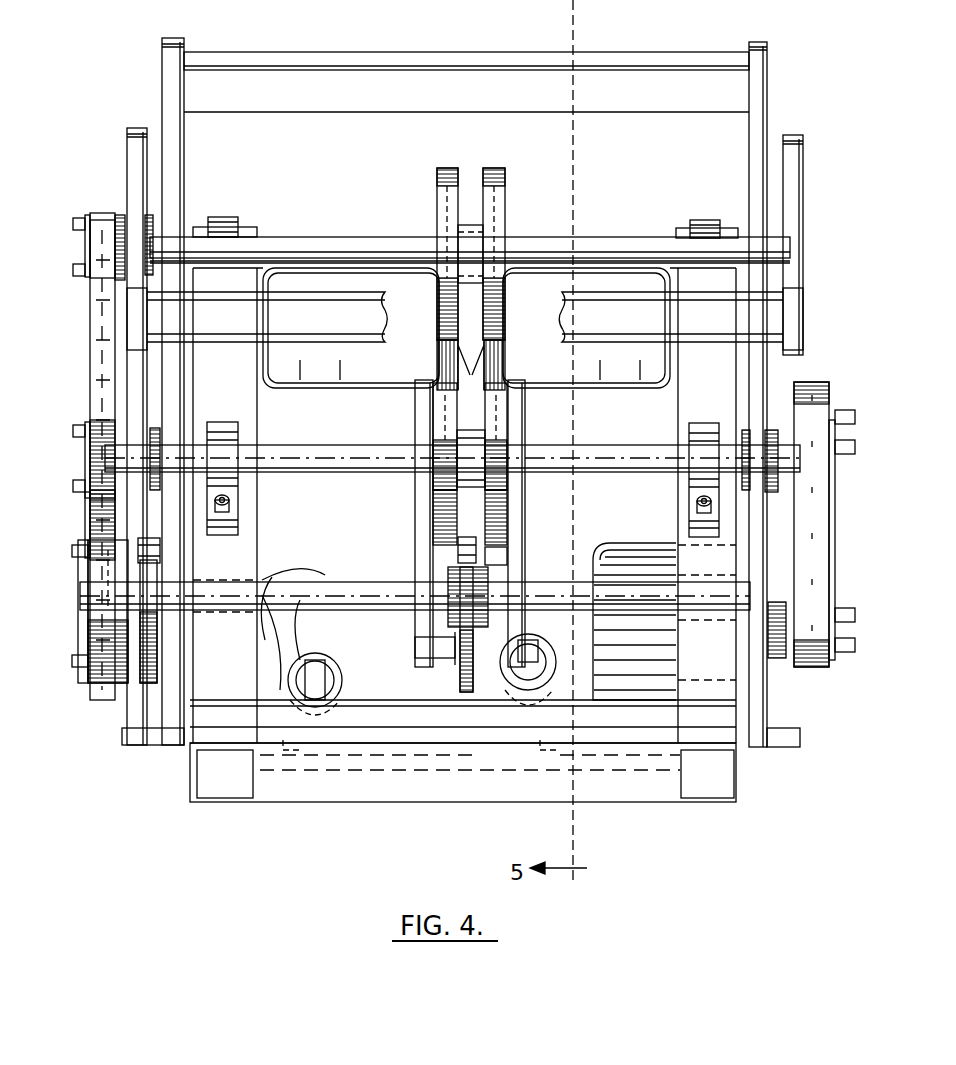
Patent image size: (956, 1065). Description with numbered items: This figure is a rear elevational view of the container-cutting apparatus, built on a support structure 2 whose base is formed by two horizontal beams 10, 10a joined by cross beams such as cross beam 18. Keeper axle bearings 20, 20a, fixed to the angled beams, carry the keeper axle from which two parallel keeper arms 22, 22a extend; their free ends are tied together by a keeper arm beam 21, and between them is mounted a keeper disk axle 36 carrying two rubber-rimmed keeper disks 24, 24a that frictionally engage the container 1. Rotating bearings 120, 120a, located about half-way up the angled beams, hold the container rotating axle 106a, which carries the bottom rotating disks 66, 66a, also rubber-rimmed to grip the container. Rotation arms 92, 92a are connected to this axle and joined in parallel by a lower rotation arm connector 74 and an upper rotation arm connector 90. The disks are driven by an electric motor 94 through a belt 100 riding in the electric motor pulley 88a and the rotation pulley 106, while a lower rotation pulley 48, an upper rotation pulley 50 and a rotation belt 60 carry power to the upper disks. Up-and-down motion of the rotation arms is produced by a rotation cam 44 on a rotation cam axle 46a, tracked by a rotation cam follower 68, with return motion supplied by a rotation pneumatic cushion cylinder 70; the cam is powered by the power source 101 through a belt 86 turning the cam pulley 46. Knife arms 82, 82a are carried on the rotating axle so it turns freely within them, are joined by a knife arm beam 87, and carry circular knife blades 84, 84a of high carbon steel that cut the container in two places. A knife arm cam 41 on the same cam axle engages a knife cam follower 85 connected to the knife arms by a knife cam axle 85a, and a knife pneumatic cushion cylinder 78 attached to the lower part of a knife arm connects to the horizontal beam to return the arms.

The container 1 is at (386, 275).
The support structure 2 is at (303, 833).
The horizontal beam 10 is at (705, 805).
The horizontal beam 10a is at (215, 805).
The cross beam 18 is at (408, 790).
The keeper axle bearing 20 is at (222, 230).
The keeper axle bearing 20a is at (705, 230).
The keeper arm beam 21 is at (308, 325).
The keeper arm 22 is at (135, 185).
The keeper arm 22a is at (793, 180).
The keeper disk 24 is at (445, 185).
The keeper disk 24a is at (493, 182).
The keeper disk axle 36 is at (528, 250).
The knife arm cam 41 is at (465, 655).
The rotation cam 44 is at (150, 683).
The cam pulley 46 is at (85, 600).
The rotation cam axle 46a is at (335, 588).
The lower rotation pulley 48 is at (85, 455).
The upper rotation pulley 50 is at (83, 248).
The rotation belt 60 is at (100, 345).
The bottom rotating disk 66 is at (445, 415).
The bottom rotating disk 66a is at (497, 415).
The rotation cam follower 68 is at (158, 548).
The rotation pneumatic cushion cylinder 70 is at (342, 683).
The lower rotation arm connector 74 is at (404, 724).
The knife pneumatic cushion cylinder 78 is at (520, 690).
The knife arm 82 is at (422, 565).
The knife arm 82a is at (518, 510).
The circular knife blade 84 is at (450, 387).
The circular knife blade 84a is at (500, 390).
The knife cam follower 85 is at (498, 548).
The knife cam axle 85a is at (498, 560).
The belt 86 is at (103, 497).
The knife arm beam 87 is at (440, 648).
The electric motor pulley 88a is at (852, 642).
The upper rotation arm connector 90 is at (418, 85).
The rotation arm 92 is at (172, 92).
The rotation arm 92a is at (760, 70).
The electric motor 94 is at (625, 560).
The belt 100 is at (818, 573).
The power source 101 is at (270, 578).
The rotation pulley 106 is at (846, 416).
The container rotating axle 106a is at (315, 447).
The rotating bearing 120 is at (225, 440).
The rotating bearing 120a is at (702, 440).